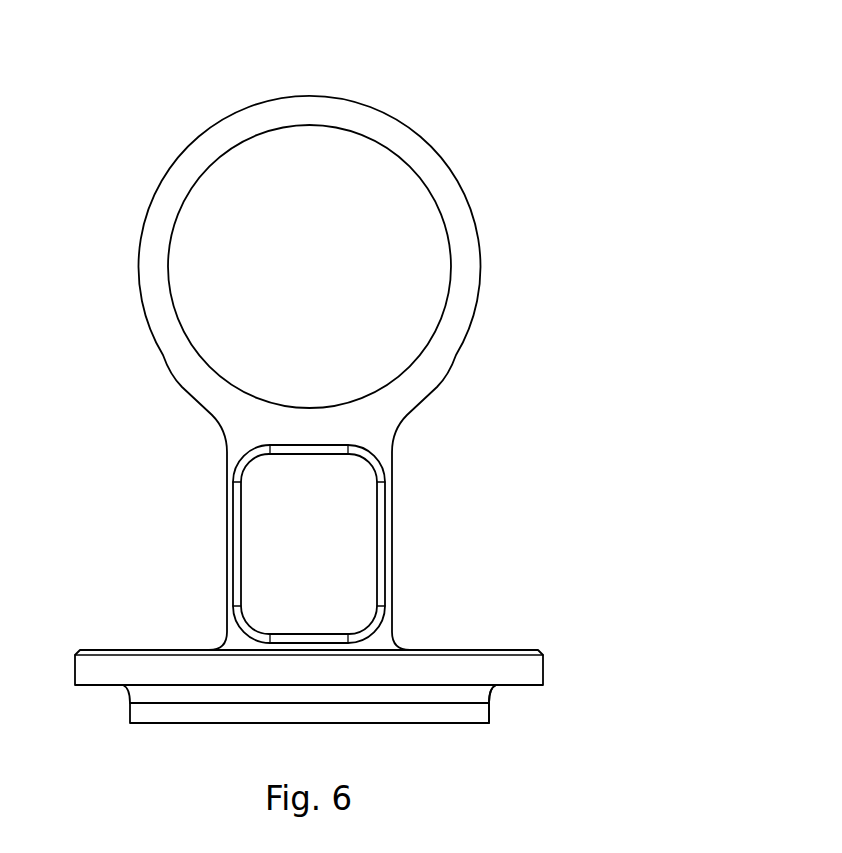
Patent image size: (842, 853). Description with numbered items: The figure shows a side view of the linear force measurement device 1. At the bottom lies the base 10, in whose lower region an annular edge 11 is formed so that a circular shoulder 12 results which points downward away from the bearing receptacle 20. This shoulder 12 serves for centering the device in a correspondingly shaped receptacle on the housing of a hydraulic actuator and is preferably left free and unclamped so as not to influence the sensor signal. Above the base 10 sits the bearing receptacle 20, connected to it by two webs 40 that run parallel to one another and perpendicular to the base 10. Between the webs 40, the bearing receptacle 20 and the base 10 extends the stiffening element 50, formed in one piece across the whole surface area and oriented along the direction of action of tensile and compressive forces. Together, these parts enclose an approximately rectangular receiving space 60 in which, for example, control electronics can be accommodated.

The linear force measurement device 1 is at (433, 108).
The base 10 is at (477, 672).
The annular edge 11 is at (507, 688).
The shoulder 12 is at (148, 713).
The bearing receptacle 20 is at (443, 350).
The webs 40 is at (232, 525).
The stiffening element 50 is at (355, 557).
The receiving space 60 is at (258, 560).